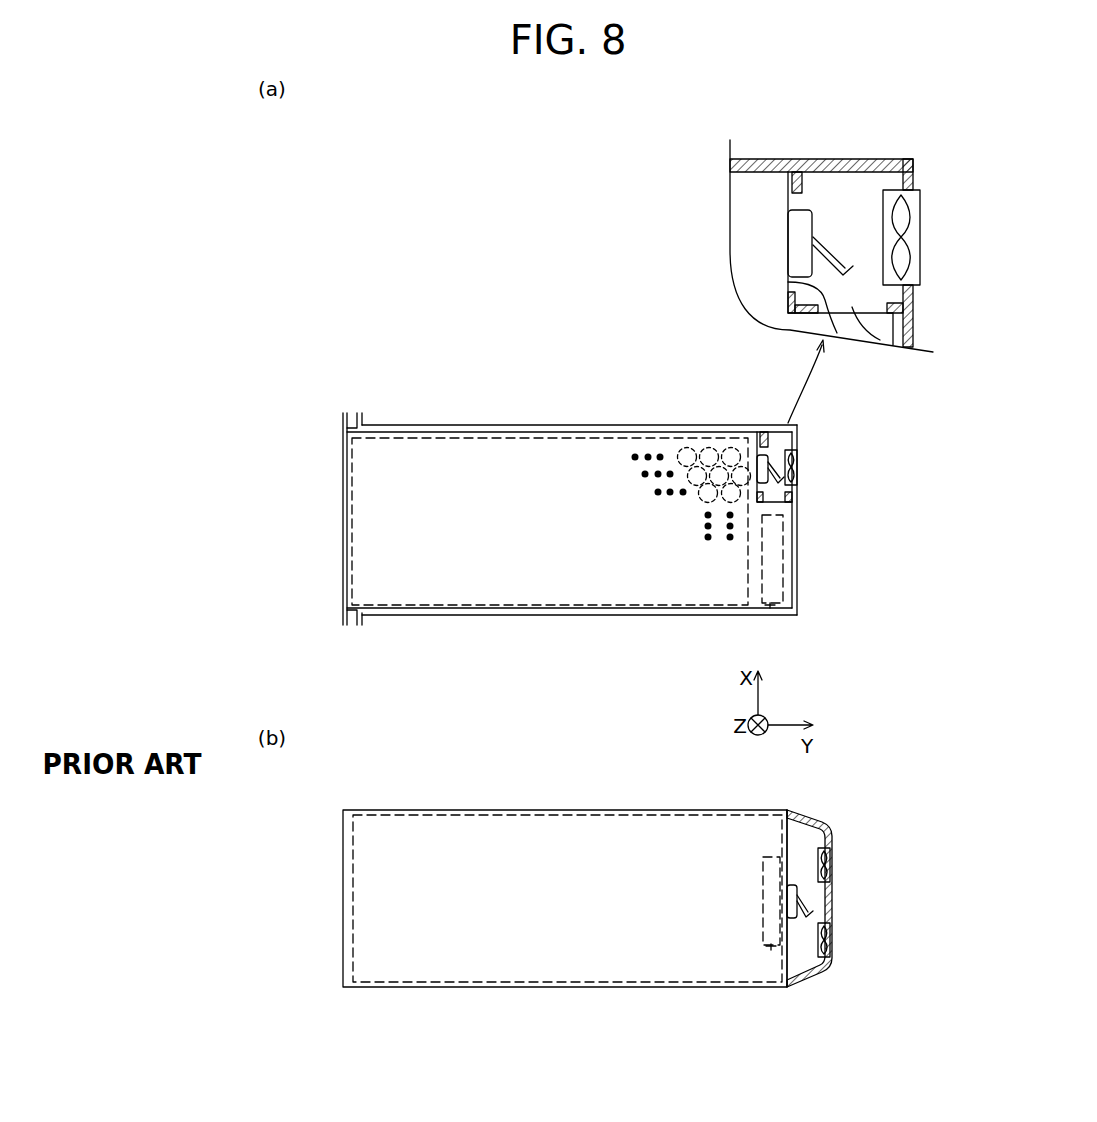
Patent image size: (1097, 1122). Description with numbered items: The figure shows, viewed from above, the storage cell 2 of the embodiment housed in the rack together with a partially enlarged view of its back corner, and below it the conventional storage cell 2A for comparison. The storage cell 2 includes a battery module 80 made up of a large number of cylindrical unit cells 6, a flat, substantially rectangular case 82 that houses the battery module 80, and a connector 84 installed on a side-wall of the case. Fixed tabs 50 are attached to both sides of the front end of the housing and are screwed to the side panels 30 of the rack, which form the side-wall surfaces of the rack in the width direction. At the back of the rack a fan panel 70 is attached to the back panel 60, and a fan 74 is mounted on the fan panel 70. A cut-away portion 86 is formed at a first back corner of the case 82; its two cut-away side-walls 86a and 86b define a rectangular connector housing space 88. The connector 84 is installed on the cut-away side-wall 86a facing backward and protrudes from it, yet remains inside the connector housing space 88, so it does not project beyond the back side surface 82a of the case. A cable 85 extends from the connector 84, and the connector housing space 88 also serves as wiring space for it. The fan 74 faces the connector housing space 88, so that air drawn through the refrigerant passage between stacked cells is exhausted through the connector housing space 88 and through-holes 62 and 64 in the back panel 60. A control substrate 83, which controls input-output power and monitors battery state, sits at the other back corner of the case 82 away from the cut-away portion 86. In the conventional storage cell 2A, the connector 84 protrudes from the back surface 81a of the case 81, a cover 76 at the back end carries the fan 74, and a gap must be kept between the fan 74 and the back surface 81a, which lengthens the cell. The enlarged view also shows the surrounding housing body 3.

The storage cell 2 is at (334, 496).
The conventional storage cell 2A is at (334, 909).
The housing body 3 is at (742, 204).
The unit cell 6 is at (690, 447).
The side panel 30 is at (553, 425).
The fixed tab 50 is at (343, 418).
The back panel 60 is at (798, 575).
The through-hole 62 is at (773, 430).
The through-hole 64 is at (793, 492).
The fan panel 70 is at (800, 432).
The fan 74 is at (800, 465).
The cover 76 is at (832, 968).
The battery module 80 is at (581, 428).
The case 81 is at (463, 948).
The back surface 81a is at (787, 960).
The case 82 is at (457, 460).
The back side surface 82a is at (798, 545).
The control substrate 83 is at (770, 610).
The connector 84 is at (757, 467).
The cable 85 is at (835, 255).
The cut-away portion 86 is at (800, 207).
The cut-away side-wall 86a is at (826, 320).
The cut-away side-wall 86b is at (862, 313).
The connector housing space 88 is at (790, 443).